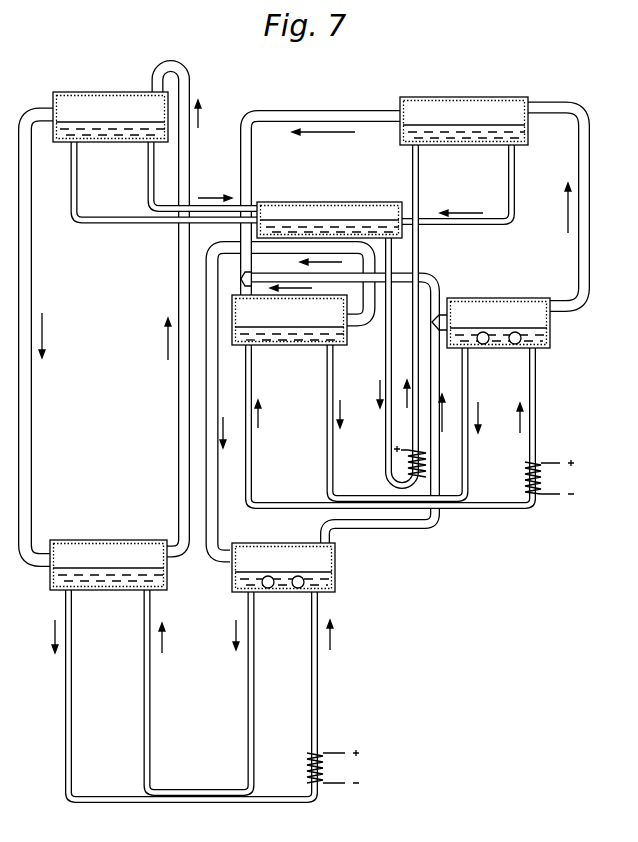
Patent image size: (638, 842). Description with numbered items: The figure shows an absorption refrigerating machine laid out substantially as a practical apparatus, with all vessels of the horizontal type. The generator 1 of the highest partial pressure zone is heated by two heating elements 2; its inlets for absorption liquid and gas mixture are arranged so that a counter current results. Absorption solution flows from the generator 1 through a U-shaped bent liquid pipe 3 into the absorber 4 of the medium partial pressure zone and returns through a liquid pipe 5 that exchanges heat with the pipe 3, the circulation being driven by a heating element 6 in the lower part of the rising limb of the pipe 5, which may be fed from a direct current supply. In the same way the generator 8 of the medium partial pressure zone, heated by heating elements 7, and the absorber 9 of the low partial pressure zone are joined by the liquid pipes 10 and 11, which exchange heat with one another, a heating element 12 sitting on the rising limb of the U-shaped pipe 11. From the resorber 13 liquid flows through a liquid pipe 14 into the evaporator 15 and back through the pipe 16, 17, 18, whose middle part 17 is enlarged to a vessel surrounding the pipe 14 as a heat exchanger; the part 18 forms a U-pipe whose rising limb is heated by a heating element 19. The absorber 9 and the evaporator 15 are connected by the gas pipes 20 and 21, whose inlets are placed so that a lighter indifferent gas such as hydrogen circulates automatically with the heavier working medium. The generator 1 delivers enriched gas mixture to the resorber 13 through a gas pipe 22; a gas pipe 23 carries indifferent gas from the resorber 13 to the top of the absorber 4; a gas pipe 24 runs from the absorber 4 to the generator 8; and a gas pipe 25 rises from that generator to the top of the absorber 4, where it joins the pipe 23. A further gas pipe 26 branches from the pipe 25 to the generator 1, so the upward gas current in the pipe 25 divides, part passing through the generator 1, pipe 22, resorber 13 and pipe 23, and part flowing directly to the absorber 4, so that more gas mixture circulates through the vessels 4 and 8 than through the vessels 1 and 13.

The generator 1 is at (529, 300).
The heating elements 2 is at (483, 345).
The liquid pipe 3 is at (327, 408).
The absorber 4 is at (298, 318).
The liquid pipe 5 is at (254, 463).
The heating element 6 is at (525, 481).
The heating elements 7 is at (292, 589).
The generator 8 is at (318, 563).
The absorber 9 is at (88, 545).
The liquid pipe 10 is at (146, 678).
The liquid pipe 11 is at (66, 705).
The heating element 12 is at (309, 763).
The resorber 13 is at (510, 103).
The liquid pipe 14 is at (106, 222).
The evaporator 15 is at (105, 97).
The liquid pipe 16 is at (147, 183).
The heat exchanger vessel 17 is at (344, 208).
The liquid pipe 18 is at (418, 264).
The heating element 19 is at (408, 466).
The gas pipe 20 is at (31, 391).
The gas pipe 21 is at (178, 392).
The gas pipe 22 is at (588, 254).
The gas pipe 23 is at (330, 111).
The gas pipe 24 is at (213, 386).
The gas pipe 25 is at (383, 292).
The gas pipe 26 is at (440, 312).